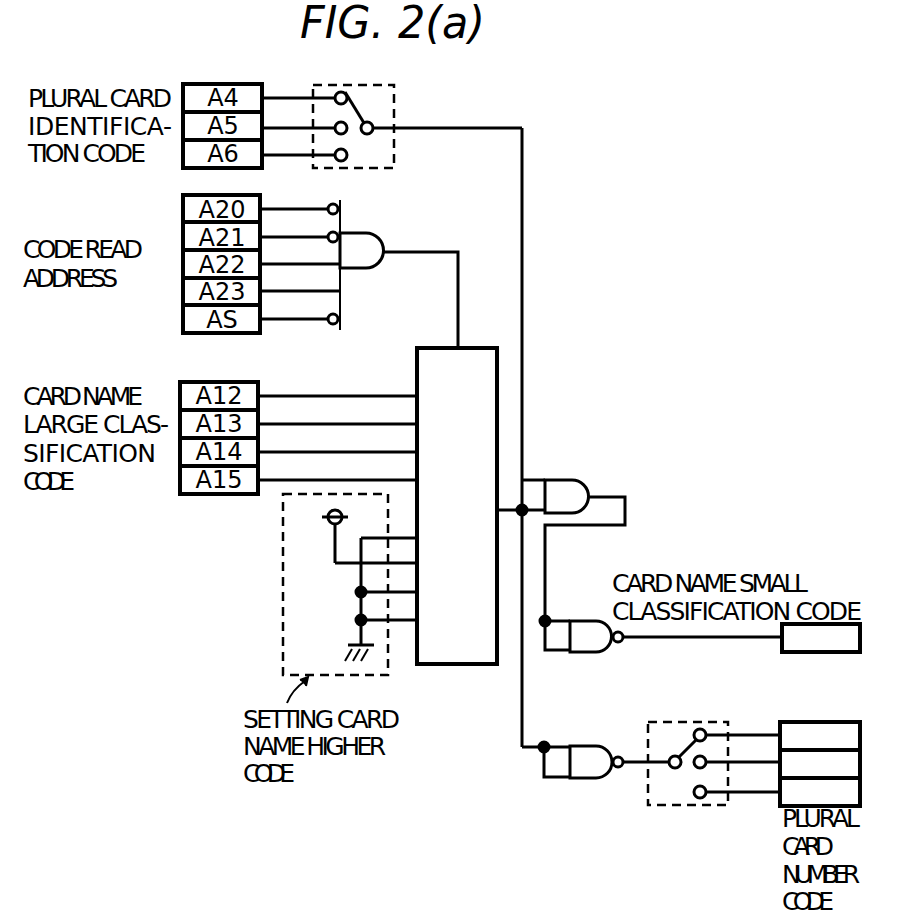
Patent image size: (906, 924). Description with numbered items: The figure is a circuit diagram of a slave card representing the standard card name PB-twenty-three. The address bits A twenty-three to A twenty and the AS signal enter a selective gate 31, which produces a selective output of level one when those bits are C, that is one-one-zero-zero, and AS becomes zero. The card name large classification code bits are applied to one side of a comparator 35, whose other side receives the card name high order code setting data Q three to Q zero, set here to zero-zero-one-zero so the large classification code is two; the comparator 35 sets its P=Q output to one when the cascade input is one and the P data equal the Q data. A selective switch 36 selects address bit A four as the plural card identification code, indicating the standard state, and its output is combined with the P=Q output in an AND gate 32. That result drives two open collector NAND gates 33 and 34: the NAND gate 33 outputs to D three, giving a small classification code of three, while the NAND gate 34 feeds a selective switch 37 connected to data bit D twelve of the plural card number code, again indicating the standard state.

The selective gate 31 is at (366, 233).
The AND gate 32 is at (572, 478).
The open collector NAND gate 33 is at (587, 618).
The open collector NAND gate 34 is at (586, 744).
The comparator 35 is at (478, 346).
The selective switch 36 is at (394, 98).
The selective switch 37 is at (662, 806).